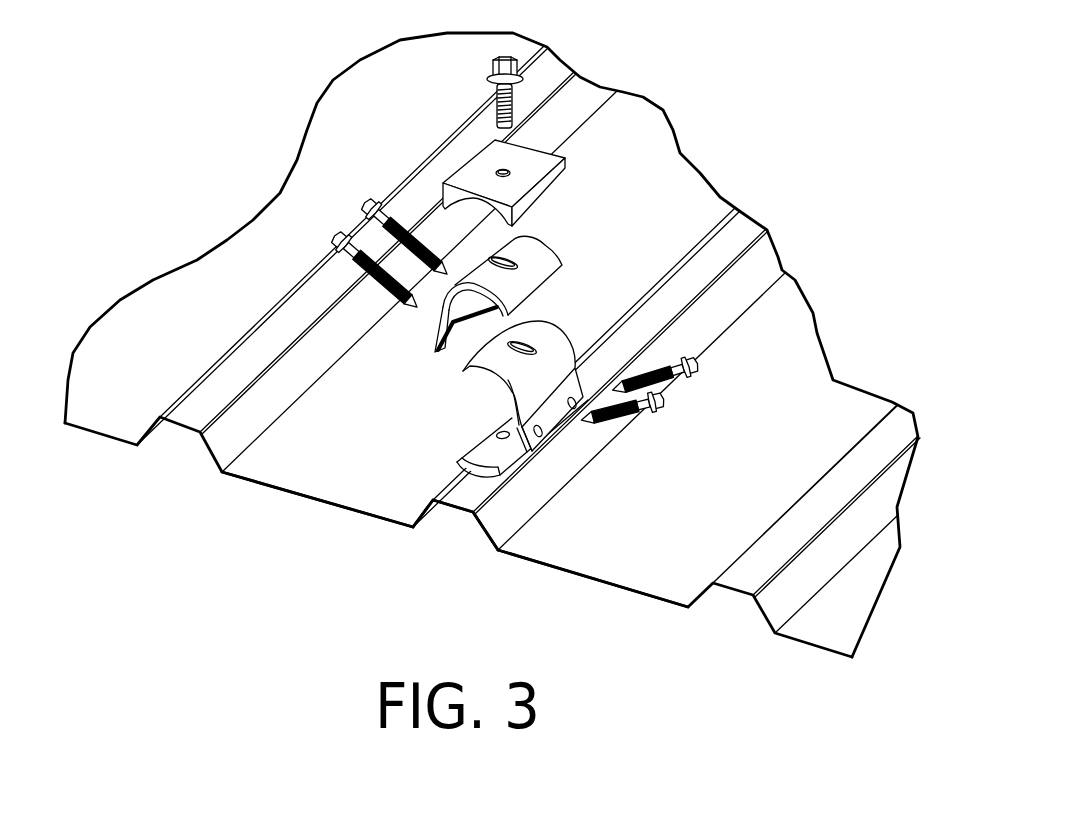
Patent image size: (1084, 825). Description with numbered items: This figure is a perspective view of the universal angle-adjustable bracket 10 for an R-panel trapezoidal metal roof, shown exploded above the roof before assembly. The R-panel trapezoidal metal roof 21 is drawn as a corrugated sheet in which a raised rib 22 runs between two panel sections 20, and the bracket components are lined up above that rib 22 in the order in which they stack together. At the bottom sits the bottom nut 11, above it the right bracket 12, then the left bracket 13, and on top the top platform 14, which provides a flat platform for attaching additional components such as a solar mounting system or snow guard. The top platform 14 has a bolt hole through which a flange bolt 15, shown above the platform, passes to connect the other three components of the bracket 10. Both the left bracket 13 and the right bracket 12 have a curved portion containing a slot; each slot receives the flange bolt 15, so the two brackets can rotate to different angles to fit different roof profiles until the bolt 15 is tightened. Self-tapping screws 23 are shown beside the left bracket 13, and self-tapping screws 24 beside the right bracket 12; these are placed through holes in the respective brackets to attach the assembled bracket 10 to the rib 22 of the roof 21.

The universal angle-adjustable bracket 10 is at (380, 408).
The bottom nut 11 is at (482, 437).
The right bracket 12 is at (547, 318).
The left bracket 13 is at (553, 253).
The top platform 14 is at (567, 160).
The flange bolt 15 is at (492, 72).
The panel sections 20 is at (356, 514).
The R-panel trapezoidal metal roof 21 is at (296, 517).
The rib 22 is at (455, 507).
The self-tapping screws 23 is at (343, 233).
The self-tapping screws 24 is at (667, 398).